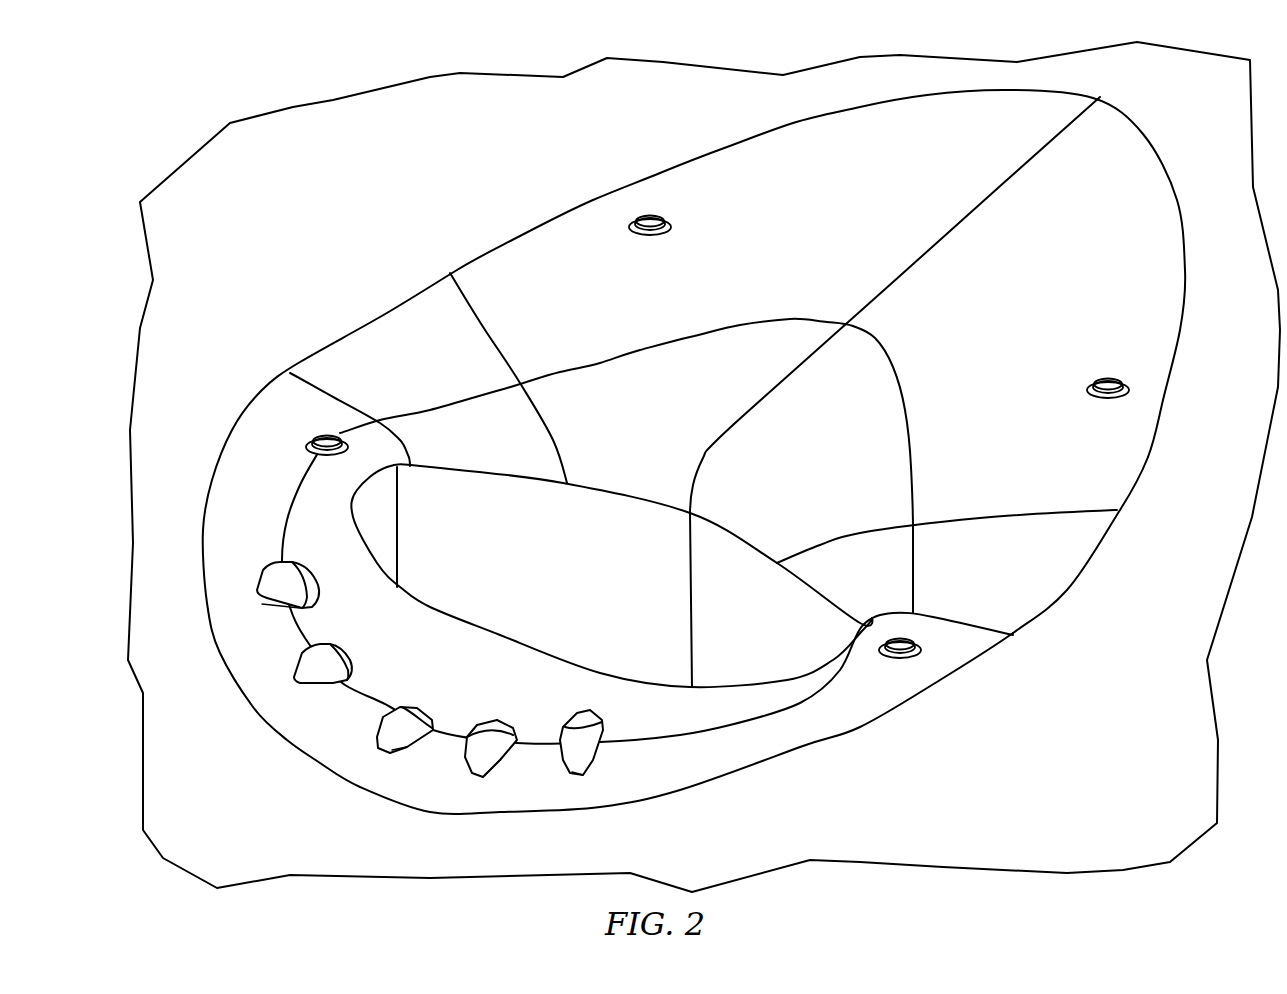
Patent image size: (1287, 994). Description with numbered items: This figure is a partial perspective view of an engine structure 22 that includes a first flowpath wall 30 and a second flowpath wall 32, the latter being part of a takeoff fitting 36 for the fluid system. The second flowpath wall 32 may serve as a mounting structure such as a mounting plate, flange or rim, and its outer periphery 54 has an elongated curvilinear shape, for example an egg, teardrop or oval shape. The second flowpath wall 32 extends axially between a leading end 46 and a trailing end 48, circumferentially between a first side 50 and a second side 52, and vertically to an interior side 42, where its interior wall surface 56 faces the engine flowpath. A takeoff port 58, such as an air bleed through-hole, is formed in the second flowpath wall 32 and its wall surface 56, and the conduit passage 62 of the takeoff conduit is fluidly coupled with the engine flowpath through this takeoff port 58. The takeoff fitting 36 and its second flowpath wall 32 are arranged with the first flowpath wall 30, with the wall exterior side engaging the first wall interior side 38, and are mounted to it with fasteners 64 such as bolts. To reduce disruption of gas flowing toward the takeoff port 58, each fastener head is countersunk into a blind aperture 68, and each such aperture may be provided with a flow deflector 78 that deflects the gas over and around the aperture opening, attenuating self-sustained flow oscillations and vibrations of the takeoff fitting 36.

The engine structure 22 is at (157, 143).
The first flowpath wall 30 is at (430, 72).
The first wall interior side 38 is at (302, 127).
The second flowpath wall 32 is at (593, 202).
The takeoff fitting 36 is at (447, 269).
The interior side 42 is at (398, 352).
The interior wall surface 56 is at (510, 270).
The trailing end 48 is at (1100, 97).
The first side 50 is at (290, 373).
The second side 52 is at (1067, 588).
The outer periphery 54 is at (1150, 457).
The takeoff port 58 is at (615, 537).
The conduit passage 62 is at (568, 584).
The fasteners 64 is at (657, 213).
The blind aperture 68 is at (314, 573).
The flow deflector 78 is at (272, 603).
The leading end 46 is at (340, 785).